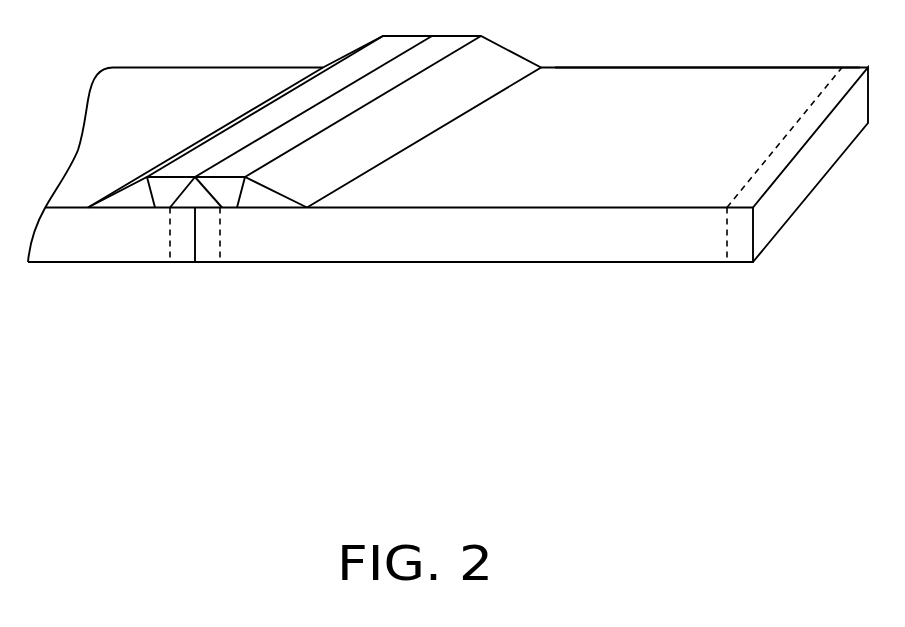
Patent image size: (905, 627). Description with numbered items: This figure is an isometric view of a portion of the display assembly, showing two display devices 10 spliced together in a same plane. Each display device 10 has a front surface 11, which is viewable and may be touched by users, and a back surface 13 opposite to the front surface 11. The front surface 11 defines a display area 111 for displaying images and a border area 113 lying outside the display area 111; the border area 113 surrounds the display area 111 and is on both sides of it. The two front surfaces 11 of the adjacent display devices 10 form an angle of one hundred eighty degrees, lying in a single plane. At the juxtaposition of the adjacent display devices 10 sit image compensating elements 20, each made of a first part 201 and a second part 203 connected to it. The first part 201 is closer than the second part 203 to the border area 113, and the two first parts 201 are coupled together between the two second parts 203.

The display device 10 is at (188, 83).
The display area 111 is at (568, 83).
The front surface 11 is at (807, 91).
The back surface 13 is at (475, 262).
The border area 113 is at (208, 250).
The image compensating element 20 is at (314, 205).
The first part 201 is at (227, 190).
The second part 203 is at (262, 198).